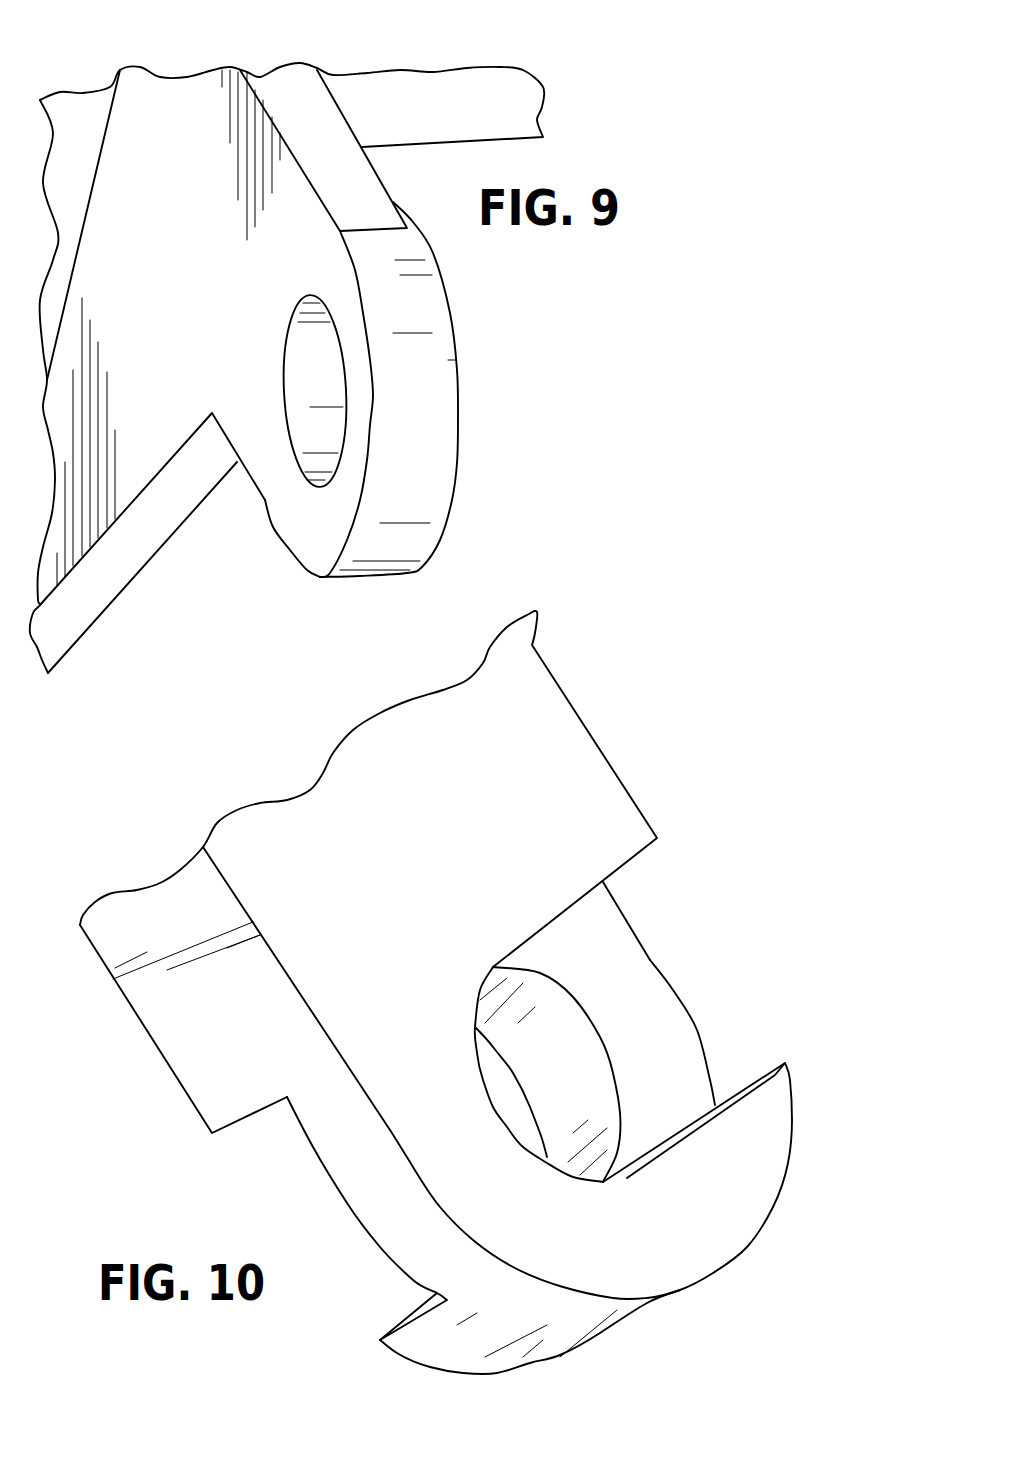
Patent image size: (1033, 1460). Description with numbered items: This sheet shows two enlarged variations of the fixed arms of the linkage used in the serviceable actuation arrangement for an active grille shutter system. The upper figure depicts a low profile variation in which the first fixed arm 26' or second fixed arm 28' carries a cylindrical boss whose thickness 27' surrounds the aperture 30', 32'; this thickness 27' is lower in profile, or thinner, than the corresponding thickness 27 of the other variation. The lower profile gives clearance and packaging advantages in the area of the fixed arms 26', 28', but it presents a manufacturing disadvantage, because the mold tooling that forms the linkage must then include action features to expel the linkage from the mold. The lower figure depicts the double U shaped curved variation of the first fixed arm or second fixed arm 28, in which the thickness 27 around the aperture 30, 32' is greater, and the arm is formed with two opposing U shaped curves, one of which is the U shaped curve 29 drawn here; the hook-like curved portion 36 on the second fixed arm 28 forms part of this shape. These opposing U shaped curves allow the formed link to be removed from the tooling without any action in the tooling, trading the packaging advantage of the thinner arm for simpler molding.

In FIG. 9, the first fixed arm 26' is at (345, 120).
In FIG. 9, the second fixed arm 28' is at (345, 120).
In FIG. 9, the thickness 27' is at (423, 389).
In FIG. 9, the aperture 30' is at (252, 439).
In FIG. 9, the aperture 32' is at (252, 439).
In FIG. 10, the aperture 32' is at (626, 1041).
In FIG. 10, the second fixed arm 28 is at (406, 865).
In FIG. 10, the retention tab 36 is at (535, 638).
In FIG. 10, the aperture 30 is at (626, 1041).
In FIG. 10, the U shaped curve 29 is at (490, 1077).
In FIG. 10, the thickness 27 is at (539, 1218).